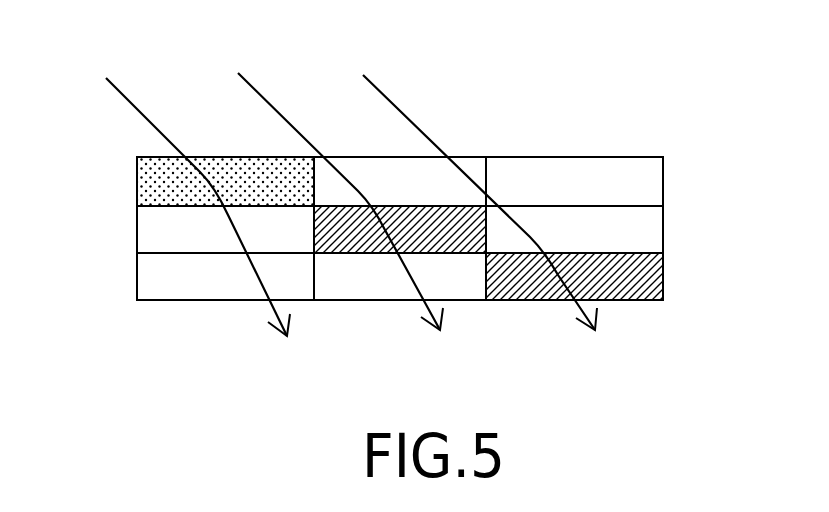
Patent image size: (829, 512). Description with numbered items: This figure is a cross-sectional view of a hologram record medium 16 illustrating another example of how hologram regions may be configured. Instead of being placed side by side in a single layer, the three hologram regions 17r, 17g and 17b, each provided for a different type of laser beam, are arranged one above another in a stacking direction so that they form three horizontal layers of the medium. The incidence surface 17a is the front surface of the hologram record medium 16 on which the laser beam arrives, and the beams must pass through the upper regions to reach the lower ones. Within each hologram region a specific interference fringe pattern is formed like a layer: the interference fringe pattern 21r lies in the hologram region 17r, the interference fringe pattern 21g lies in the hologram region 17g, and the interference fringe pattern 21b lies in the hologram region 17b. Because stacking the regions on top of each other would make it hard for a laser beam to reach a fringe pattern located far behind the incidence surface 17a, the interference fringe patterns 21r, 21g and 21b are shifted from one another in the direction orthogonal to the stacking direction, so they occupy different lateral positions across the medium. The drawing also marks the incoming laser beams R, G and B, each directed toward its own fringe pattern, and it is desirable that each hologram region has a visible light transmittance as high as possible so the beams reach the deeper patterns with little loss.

The hologram record medium 16 is at (107, 245).
The incidence surface 17a is at (625, 157).
The hologram region 17r is at (674, 175).
The hologram region 17g is at (674, 227).
The hologram region 17b is at (674, 278).
The interference fringe pattern 21r is at (258, 157).
The interference fringe pattern 21g is at (457, 243).
The interference fringe pattern 21b is at (640, 290).
The red light ray R is at (187, 194).
The green light ray G is at (327, 190).
The blue light ray B is at (474, 188).